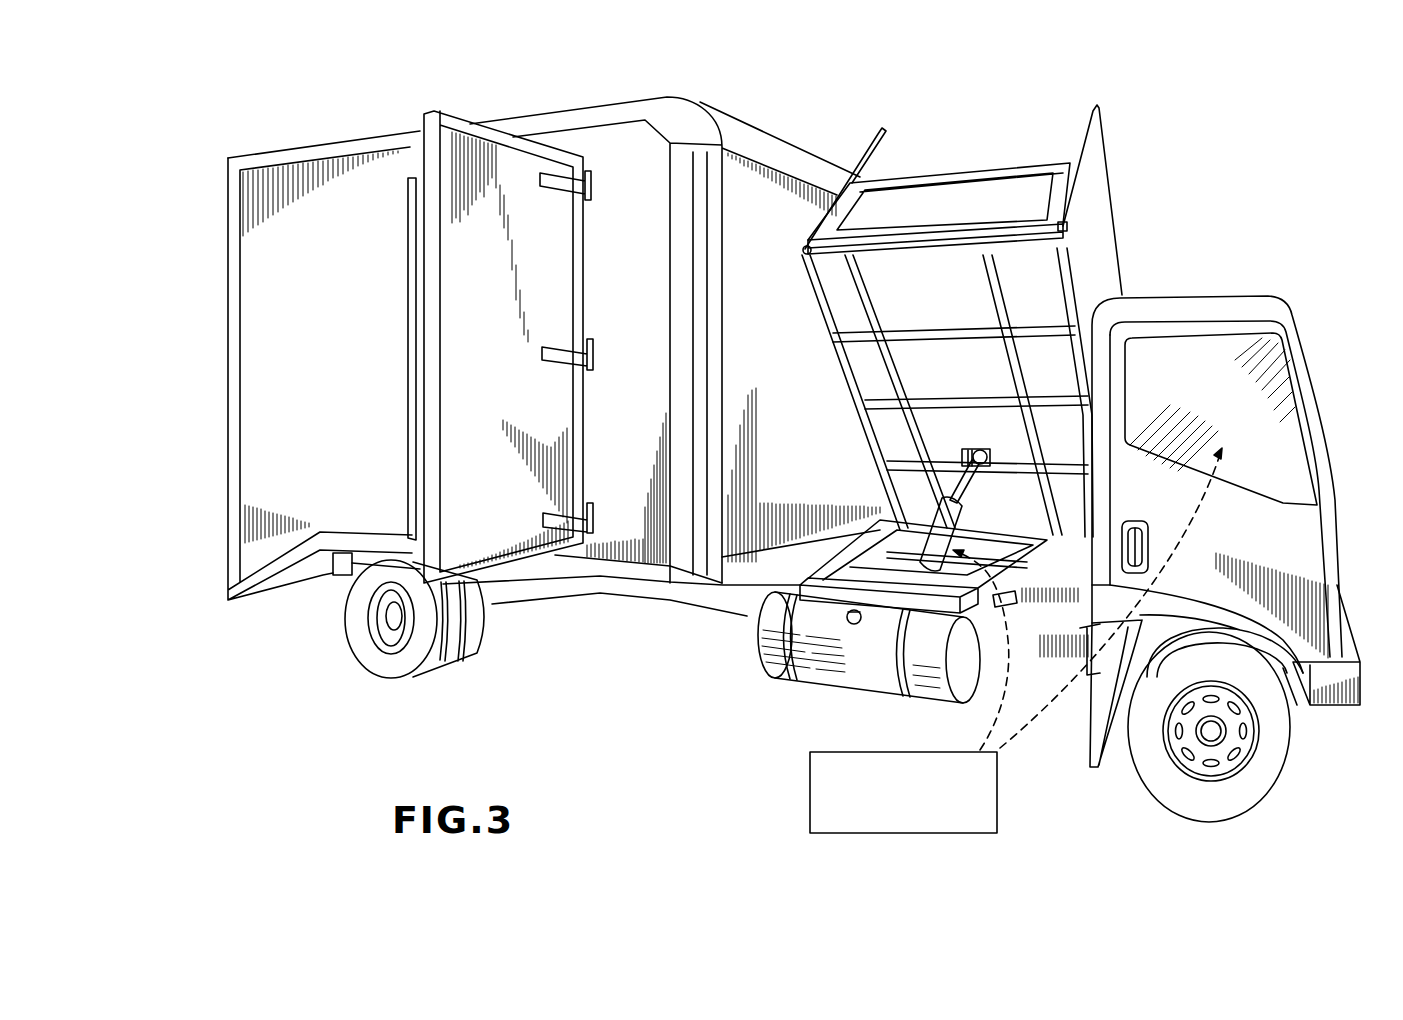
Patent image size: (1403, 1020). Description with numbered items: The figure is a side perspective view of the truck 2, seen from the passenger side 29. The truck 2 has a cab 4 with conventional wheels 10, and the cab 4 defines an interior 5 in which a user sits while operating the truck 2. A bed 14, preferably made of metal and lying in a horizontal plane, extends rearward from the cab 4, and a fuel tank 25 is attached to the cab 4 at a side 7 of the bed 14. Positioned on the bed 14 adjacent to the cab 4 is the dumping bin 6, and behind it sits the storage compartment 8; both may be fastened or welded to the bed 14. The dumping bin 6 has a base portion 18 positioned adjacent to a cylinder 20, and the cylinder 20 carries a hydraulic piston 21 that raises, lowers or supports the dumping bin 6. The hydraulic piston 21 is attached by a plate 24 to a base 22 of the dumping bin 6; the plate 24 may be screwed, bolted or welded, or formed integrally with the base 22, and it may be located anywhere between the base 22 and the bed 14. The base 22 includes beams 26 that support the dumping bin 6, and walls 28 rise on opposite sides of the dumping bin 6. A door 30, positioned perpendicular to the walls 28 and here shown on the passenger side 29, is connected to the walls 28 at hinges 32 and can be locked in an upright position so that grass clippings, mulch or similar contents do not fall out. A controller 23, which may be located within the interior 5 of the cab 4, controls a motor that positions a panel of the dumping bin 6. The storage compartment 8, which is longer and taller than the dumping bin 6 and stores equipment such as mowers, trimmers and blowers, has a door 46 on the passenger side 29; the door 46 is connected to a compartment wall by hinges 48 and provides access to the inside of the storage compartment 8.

The truck 2 is at (1302, 268).
The cab 4 is at (1333, 445).
The interior 5 is at (1266, 401).
The dumping bin 6 is at (1105, 147).
The side 7 is at (688, 597).
The storage compartment 8 is at (747, 123).
The wheels 10 is at (484, 640).
The bed 14 is at (1070, 575).
The base portion 18 is at (760, 602).
The cylinder 20 is at (965, 503).
The hydraulic piston 21 is at (970, 475).
The base 22 is at (1045, 295).
The controller 23 is at (810, 777).
The plate 24 is at (980, 452).
The fuel tank 25 is at (847, 673).
The beams 26 is at (867, 283).
The walls 28 is at (885, 158).
The passenger side 29 is at (1280, 538).
The door 30 is at (968, 203).
The hinges 32 is at (805, 249).
The door 46 is at (555, 274).
The hinges 48 is at (591, 186).